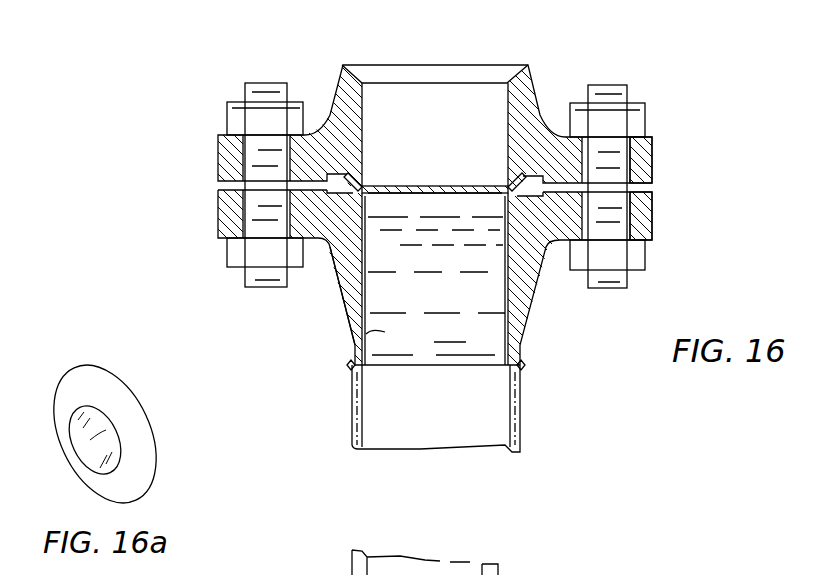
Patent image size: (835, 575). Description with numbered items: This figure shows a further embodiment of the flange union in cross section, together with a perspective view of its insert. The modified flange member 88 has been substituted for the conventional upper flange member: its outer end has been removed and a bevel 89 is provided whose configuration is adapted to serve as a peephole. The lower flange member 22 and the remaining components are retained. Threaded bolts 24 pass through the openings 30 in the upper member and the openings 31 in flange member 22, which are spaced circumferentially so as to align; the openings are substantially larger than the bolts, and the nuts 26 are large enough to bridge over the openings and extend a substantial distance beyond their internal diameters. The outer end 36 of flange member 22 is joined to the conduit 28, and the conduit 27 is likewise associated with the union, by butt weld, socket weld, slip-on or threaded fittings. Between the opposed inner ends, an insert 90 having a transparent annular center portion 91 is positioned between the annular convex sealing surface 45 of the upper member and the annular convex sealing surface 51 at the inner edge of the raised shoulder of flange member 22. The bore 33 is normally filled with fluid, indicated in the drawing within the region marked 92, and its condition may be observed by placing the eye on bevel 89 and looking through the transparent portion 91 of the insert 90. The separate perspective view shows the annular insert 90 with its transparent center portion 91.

In FIG. 16, the flange member 22 is at (530, 310).
In FIG. 16, the threaded bolt 24 is at (628, 92).
In FIG. 16, the nut 26 is at (652, 118).
In FIG. 16, the conduit 27 is at (527, 573).
In FIG. 16, the conduit 28 is at (522, 421).
In FIG. 16, the opening 30 is at (634, 162).
In FIG. 16, the opening 31 is at (634, 222).
In FIG. 16, the bore 33 is at (364, 333).
In FIG. 16, the outer end 36 is at (350, 343).
In FIG. 16, the convex sealing surface 45 is at (361, 181).
In FIG. 16, the convex sealing surface 51 is at (360, 196).
In FIG. 16, the flange member 88 is at (538, 100).
In FIG. 16, the bevel 89 is at (488, 78).
In FIG. 16, the insert 90 is at (491, 186).
In FIG. 16A, the insert 90 is at (143, 452).
In FIG. 16, the transparent annular center portion 91 is at (426, 186).
In FIG. 16A, the transparent annular center portion 91 is at (95, 442).
In FIG. 16, the flange member 92 is at (436, 286).